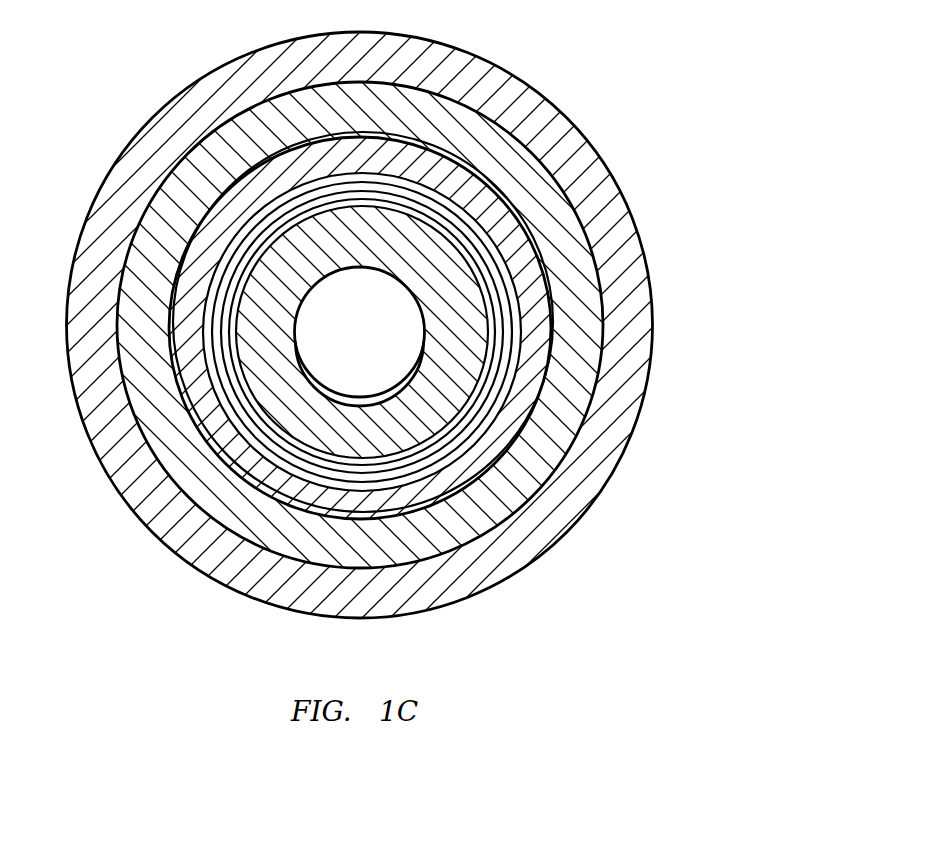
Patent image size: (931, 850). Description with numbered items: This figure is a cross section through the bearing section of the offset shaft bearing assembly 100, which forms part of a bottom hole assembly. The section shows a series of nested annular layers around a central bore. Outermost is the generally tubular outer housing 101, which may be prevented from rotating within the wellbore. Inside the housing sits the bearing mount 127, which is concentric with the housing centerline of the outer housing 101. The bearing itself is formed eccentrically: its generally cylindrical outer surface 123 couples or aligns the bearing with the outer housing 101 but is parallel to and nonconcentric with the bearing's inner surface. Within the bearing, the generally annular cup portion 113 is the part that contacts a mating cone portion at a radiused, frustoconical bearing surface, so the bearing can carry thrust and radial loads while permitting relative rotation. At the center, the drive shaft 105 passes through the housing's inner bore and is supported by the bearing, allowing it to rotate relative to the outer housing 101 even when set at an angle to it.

The offset shaft bearing assembly 100 is at (407, 309).
The outer housing 101 is at (470, 70).
The bearing mount 127 is at (532, 200).
The outer surface 123 is at (548, 385).
The cup portion 113 is at (530, 323).
The drive shaft 105 is at (265, 407).